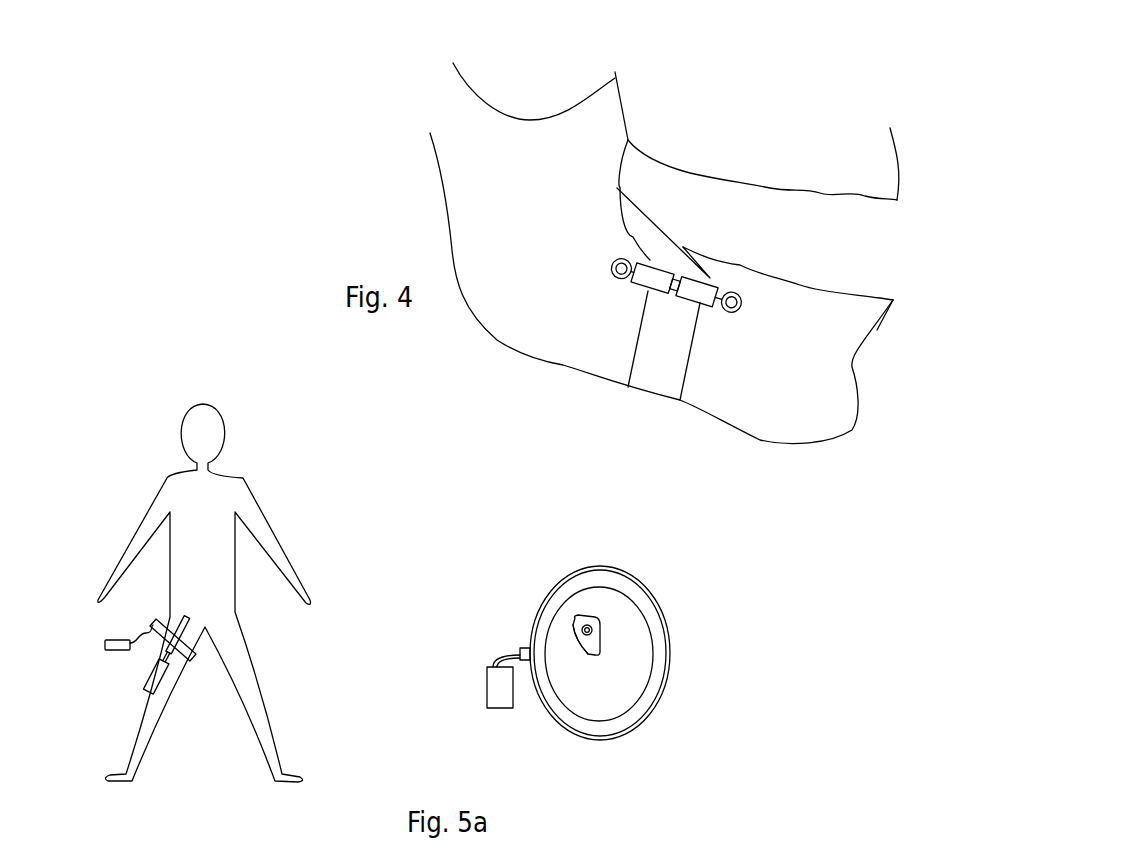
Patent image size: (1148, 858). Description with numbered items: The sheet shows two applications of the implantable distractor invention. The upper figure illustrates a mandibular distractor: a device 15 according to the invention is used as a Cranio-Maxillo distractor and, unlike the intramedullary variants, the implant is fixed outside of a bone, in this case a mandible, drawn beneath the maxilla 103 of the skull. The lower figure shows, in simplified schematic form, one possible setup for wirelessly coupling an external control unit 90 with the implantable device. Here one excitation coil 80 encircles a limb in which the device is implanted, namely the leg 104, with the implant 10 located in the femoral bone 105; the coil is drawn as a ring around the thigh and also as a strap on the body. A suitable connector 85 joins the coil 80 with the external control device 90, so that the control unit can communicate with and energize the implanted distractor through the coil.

In FIG. 5A, the intramedullary distractor 10 is at (165, 670).
In FIG. 4, the Cranio-Maxillo distractor 15 is at (707, 310).
In FIG. 5A, the charging coil 80 is at (193, 652).
In FIG. 5A, the connector 85 is at (503, 644).
In FIG. 5A, the control unit 90 is at (120, 650).
In FIG. 4, the maxilla 103 is at (543, 295).
In FIG. 5A, the leg 104 is at (638, 672).
In FIG. 5A, the femoral bone 105 is at (592, 645).